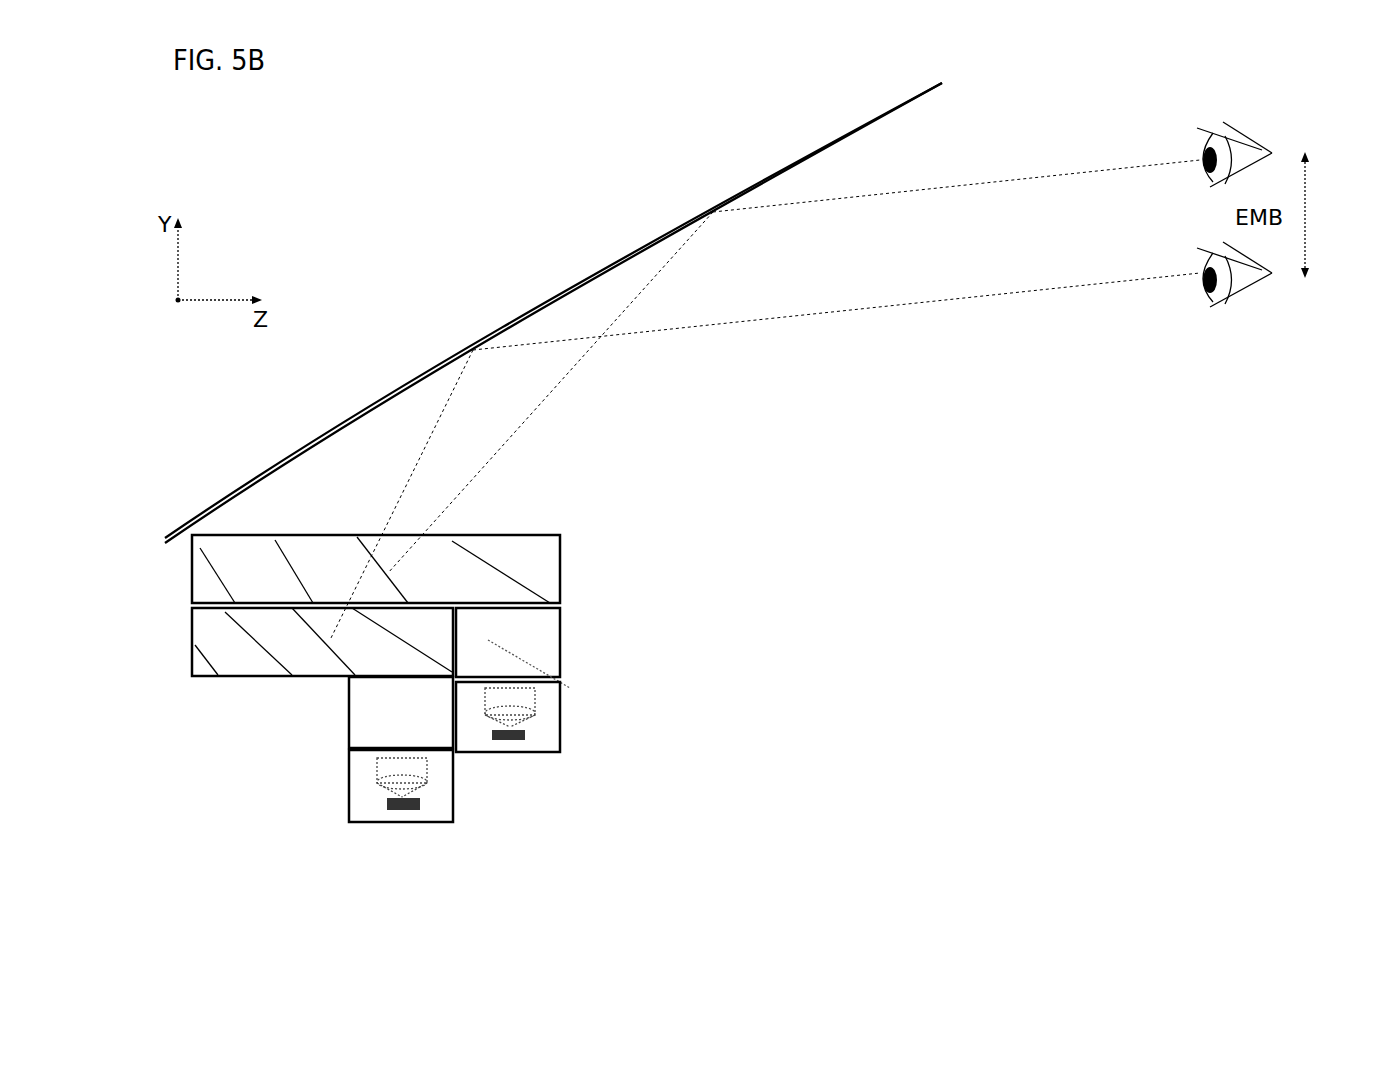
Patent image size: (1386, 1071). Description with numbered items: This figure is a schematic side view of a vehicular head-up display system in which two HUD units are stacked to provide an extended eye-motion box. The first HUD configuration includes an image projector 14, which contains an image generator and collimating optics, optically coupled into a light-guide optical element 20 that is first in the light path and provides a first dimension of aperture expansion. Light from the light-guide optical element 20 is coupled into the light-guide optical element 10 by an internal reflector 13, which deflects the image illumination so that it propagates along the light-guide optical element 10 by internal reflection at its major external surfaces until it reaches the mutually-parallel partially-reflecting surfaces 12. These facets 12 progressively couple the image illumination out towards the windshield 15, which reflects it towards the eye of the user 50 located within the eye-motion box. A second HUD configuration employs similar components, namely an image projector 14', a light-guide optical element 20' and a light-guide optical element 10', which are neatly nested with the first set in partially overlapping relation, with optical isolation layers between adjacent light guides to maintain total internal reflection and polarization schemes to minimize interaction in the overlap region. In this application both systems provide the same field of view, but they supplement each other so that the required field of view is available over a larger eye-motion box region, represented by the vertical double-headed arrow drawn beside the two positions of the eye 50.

The windshield 15 is at (554, 298).
The eye of the user 50 is at (1234, 224).
The light-guide optical element 10 is at (475, 511).
The partially-reflecting surfaces 12 is at (363, 563).
The internal reflector 13 is at (535, 578).
The light-guide optical element 20 is at (628, 648).
The image projector 14 is at (508, 717).
The light-guide optical element 10' is at (291, 668).
The light-guide optical element 20' is at (350, 725).
The image projector 14' is at (401, 786).